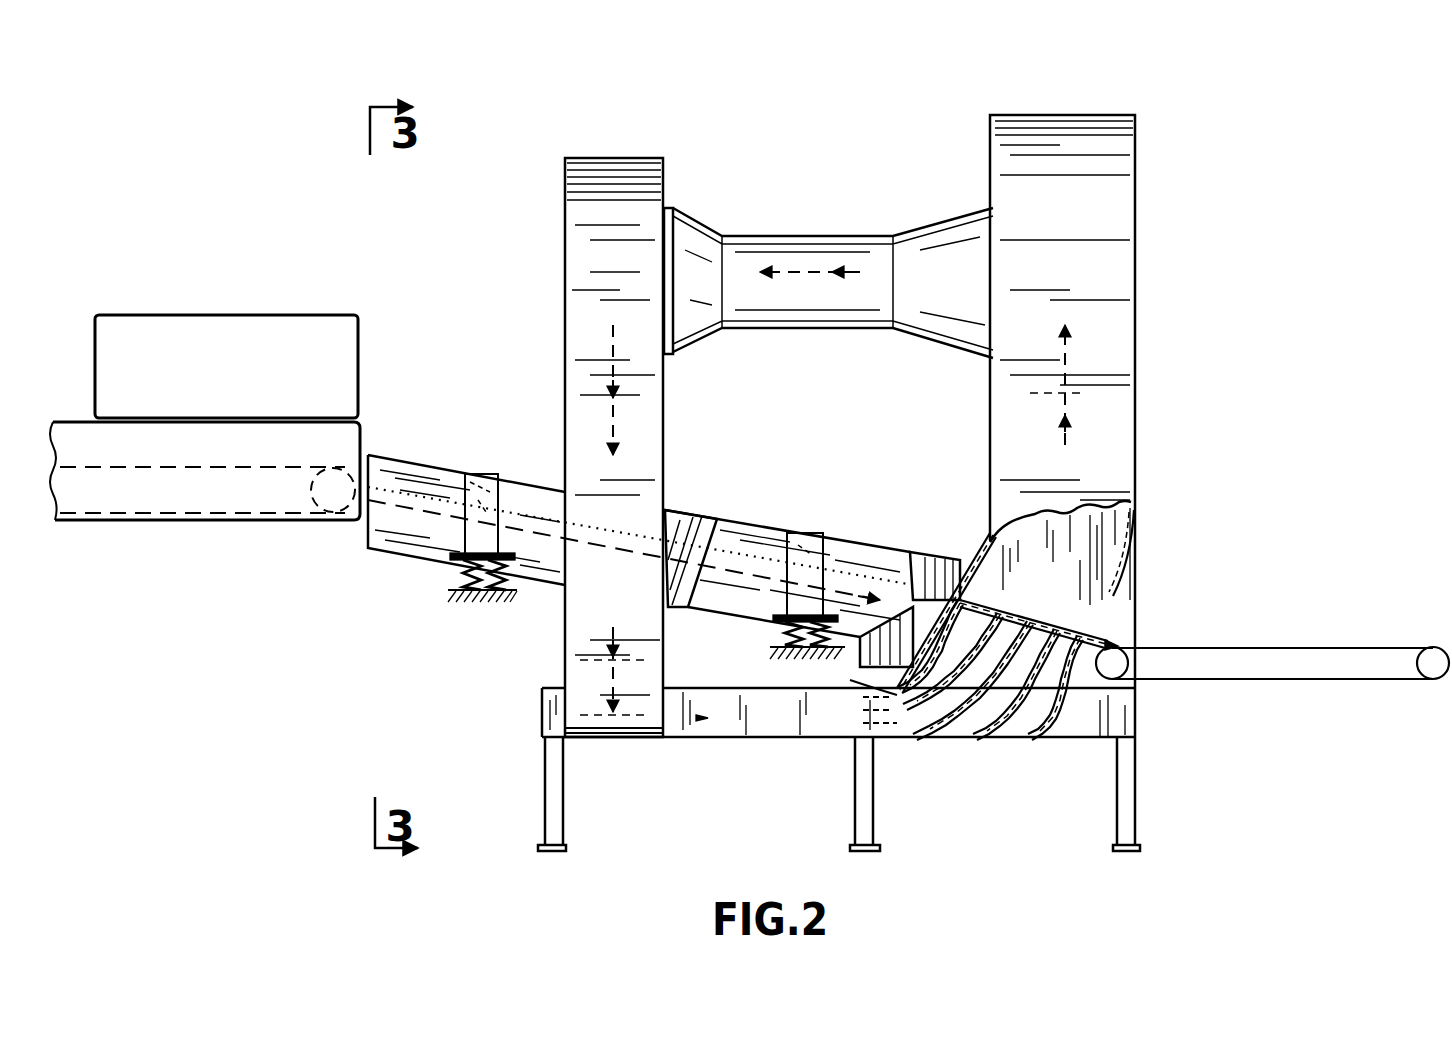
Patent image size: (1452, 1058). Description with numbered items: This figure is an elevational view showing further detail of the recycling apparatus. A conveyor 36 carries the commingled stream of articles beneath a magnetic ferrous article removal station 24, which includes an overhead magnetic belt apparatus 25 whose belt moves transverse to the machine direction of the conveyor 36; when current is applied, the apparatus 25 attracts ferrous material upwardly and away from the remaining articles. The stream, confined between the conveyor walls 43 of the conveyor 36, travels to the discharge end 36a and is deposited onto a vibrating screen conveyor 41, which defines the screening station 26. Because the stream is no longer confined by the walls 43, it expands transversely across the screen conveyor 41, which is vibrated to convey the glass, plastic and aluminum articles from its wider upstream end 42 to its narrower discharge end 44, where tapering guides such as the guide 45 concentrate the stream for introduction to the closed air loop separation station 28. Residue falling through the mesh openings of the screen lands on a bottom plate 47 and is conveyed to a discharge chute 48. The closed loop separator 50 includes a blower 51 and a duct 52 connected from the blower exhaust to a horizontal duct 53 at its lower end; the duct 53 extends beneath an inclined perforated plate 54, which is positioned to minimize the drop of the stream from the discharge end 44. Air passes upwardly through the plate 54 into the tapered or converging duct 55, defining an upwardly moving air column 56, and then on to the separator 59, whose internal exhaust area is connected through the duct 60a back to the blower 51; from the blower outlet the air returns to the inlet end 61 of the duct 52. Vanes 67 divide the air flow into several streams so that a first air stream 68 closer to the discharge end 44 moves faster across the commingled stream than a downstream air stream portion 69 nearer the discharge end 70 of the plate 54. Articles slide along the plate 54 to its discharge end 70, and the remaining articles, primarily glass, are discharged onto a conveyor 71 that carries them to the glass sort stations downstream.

The magnetic ferrous article removal station 24 is at (233, 247).
The overhead magnetic belt apparatus 25 is at (329, 335).
The conveyor 36 is at (150, 480).
The discharge end of the conveyor 36a is at (368, 428).
The conveyor walls 43 is at (304, 459).
The upstream end of the screen conveyor 42 is at (368, 476).
The duct 52 is at (577, 434).
The blower 51 is at (623, 195).
The inlet end of the duct 61 is at (606, 269).
The horizontal duct 53 is at (618, 730).
The closed loop separator 50 is at (879, 152).
The duct 60a is at (820, 247).
The tapered or converging duct 55 is at (1120, 393).
The separator 59 is at (1100, 132).
The upwardly moving air column 56 is at (1045, 385).
The screening station 26 is at (854, 474).
The vibrating screen conveyor 41 is at (743, 525).
The bottom plate 47 is at (713, 612).
The discharge chute 48 is at (880, 672).
The tapering guide 45 is at (932, 571).
The discharge end of the screen 44 is at (964, 560).
The first air stream 68 is at (980, 588).
The perforated plate 54 is at (1017, 612).
The vanes 67 is at (970, 730).
The downstream air stream portion 69 is at (1075, 625).
The discharge end of the plate 70 is at (1116, 641).
The closed air loop separation station 28 is at (1110, 573).
The conveyor 71 is at (1272, 648).